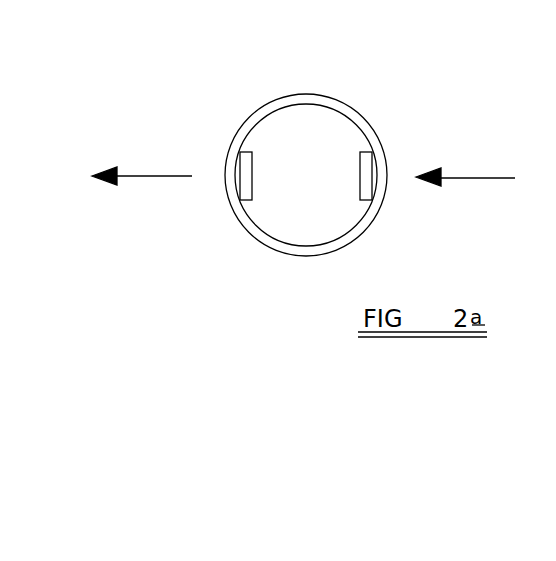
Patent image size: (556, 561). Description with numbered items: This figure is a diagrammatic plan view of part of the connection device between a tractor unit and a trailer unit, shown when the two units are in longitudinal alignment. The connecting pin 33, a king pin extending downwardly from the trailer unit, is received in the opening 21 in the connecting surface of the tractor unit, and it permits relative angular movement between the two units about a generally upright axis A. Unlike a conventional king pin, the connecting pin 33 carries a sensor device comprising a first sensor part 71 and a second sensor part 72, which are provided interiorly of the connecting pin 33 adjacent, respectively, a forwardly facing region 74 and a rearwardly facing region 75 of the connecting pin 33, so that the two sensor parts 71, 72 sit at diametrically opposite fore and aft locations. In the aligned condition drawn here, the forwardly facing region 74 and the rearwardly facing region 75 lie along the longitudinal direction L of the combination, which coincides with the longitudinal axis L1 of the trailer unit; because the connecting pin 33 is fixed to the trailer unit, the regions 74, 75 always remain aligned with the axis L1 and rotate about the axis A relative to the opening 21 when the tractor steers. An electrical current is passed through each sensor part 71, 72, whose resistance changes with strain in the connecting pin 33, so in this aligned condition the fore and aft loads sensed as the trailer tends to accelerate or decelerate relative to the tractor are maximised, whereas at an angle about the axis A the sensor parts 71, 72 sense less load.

The opening 21 is at (375, 133).
The connecting pin 33 is at (335, 147).
The first sensor part 71 is at (240, 152).
The second sensor part 72 is at (360, 173).
The forwardly facing region 74 is at (236, 175).
The rearwardly facing region 75 is at (388, 166).
The upright axis A is at (307, 175).
The longitudinal direction L is at (492, 178).
The longitudinal axis of the trailer unit L1 is at (172, 177).